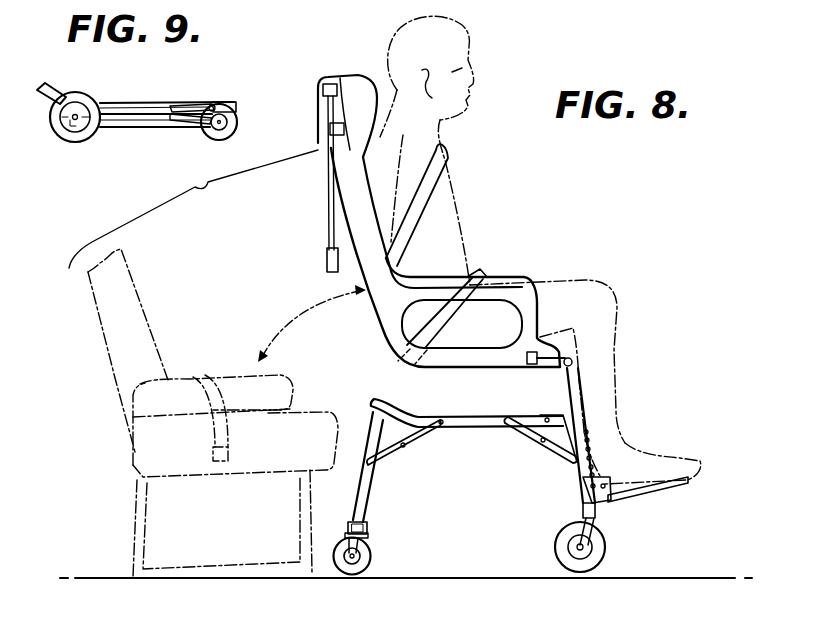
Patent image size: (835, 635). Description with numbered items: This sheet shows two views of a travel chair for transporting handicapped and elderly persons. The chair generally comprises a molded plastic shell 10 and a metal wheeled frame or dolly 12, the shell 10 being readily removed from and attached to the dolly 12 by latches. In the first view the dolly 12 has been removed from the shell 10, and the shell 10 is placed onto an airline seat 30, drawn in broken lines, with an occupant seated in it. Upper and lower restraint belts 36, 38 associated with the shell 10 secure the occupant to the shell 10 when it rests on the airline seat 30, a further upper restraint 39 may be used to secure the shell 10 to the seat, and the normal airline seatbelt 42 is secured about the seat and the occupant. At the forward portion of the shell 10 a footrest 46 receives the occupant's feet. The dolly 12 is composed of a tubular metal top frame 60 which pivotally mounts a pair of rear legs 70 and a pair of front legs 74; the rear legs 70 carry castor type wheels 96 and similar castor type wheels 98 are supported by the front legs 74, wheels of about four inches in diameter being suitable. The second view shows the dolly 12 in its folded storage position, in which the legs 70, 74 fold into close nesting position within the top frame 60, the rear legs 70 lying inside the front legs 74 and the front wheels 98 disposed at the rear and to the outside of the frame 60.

In FIG. 8, the shell 10 is at (363, 343).
In FIG. 8, the dolly 12 is at (473, 432).
In FIG. 8, the airline seat 30 is at (235, 343).
In FIG. 8, the upper restraint belt 36 is at (446, 162).
In FIG. 8, the lower restraint belt 38 is at (481, 275).
In FIG. 8, the further upper restraint 39 is at (326, 208).
In FIG. 8, the airline seatbelt 42 is at (206, 377).
In FIG. 8, the footrest 46 is at (556, 375).
In FIG. 9, the metal frame 60 is at (153, 102).
In FIG. 8, the rear legs 70 is at (370, 484).
In FIG. 9, the front legs 74 is at (137, 119).
In FIG. 8, the front legs 74 is at (572, 479).
In FIG. 9, the castor type wheels 96 is at (238, 128).
In FIG. 8, the castor type wheels 96 is at (370, 560).
In FIG. 9, the castor type wheels 98 is at (70, 134).
In FIG. 8, the castor type wheels 98 is at (560, 550).